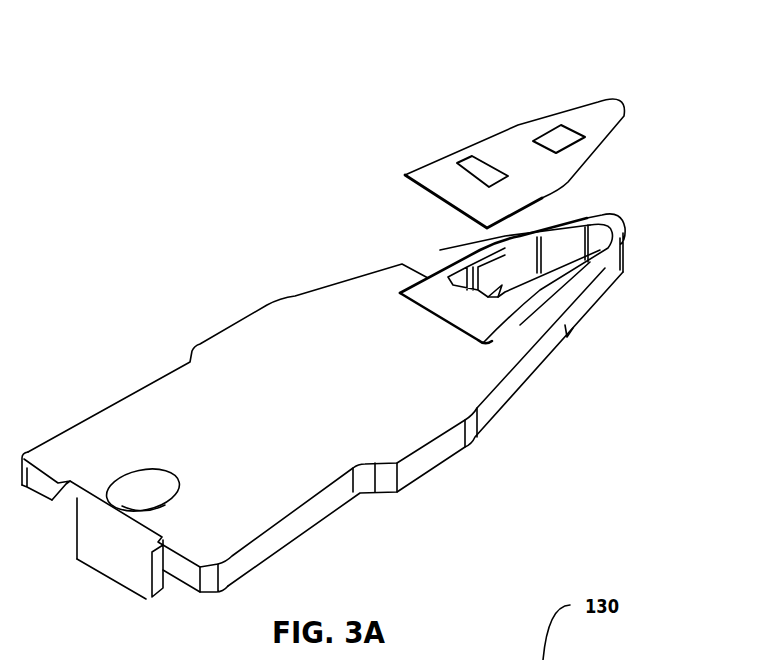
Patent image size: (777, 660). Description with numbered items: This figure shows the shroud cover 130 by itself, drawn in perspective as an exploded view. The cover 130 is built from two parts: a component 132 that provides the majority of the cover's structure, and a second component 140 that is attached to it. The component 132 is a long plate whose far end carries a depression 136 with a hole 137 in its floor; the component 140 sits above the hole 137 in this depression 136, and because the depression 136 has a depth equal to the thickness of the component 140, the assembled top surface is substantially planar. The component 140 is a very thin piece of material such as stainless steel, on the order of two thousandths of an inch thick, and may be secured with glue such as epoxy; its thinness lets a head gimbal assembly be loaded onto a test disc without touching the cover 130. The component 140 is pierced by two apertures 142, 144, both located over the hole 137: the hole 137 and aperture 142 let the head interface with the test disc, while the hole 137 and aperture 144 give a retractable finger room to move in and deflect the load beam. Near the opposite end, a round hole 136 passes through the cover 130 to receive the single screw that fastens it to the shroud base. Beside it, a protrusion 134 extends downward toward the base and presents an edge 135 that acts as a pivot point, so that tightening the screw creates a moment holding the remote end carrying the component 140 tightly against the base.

The cover 130 is at (213, 108).
The component 132 is at (316, 420).
The protrusion 134 is at (131, 562).
The edge 135 is at (143, 601).
The depression / hole 136 is at (435, 295).
The hole 137 is at (552, 278).
The component 140 is at (554, 180).
The aperture 142 is at (560, 137).
The aperture 144 is at (473, 170).